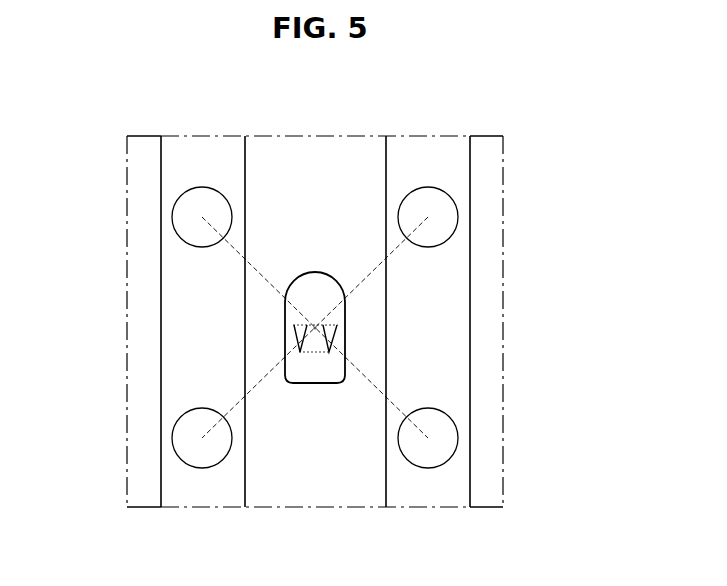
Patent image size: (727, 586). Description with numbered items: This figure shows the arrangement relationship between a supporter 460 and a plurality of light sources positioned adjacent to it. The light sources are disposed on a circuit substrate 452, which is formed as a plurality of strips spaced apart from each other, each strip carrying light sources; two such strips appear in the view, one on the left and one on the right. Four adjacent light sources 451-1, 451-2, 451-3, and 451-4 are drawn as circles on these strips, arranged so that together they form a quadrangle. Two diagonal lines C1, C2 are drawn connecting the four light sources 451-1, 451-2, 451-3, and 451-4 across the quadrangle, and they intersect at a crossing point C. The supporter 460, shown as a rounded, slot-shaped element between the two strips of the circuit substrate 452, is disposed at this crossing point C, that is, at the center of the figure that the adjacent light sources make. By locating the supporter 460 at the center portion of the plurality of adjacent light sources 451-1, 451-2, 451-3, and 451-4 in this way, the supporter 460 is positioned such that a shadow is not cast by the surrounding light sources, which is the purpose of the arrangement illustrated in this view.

The light source 451-1 is at (188, 217).
The light source 451-2 is at (440, 216).
The light source 451-3 is at (188, 438).
The light source 451-4 is at (440, 438).
The circuit substrate 452 is at (196, 320).
The supporter 460 is at (313, 385).
The crossing point C is at (315, 327).
The diagonal line C1 is at (370, 273).
The diagonal line C2 is at (260, 273).